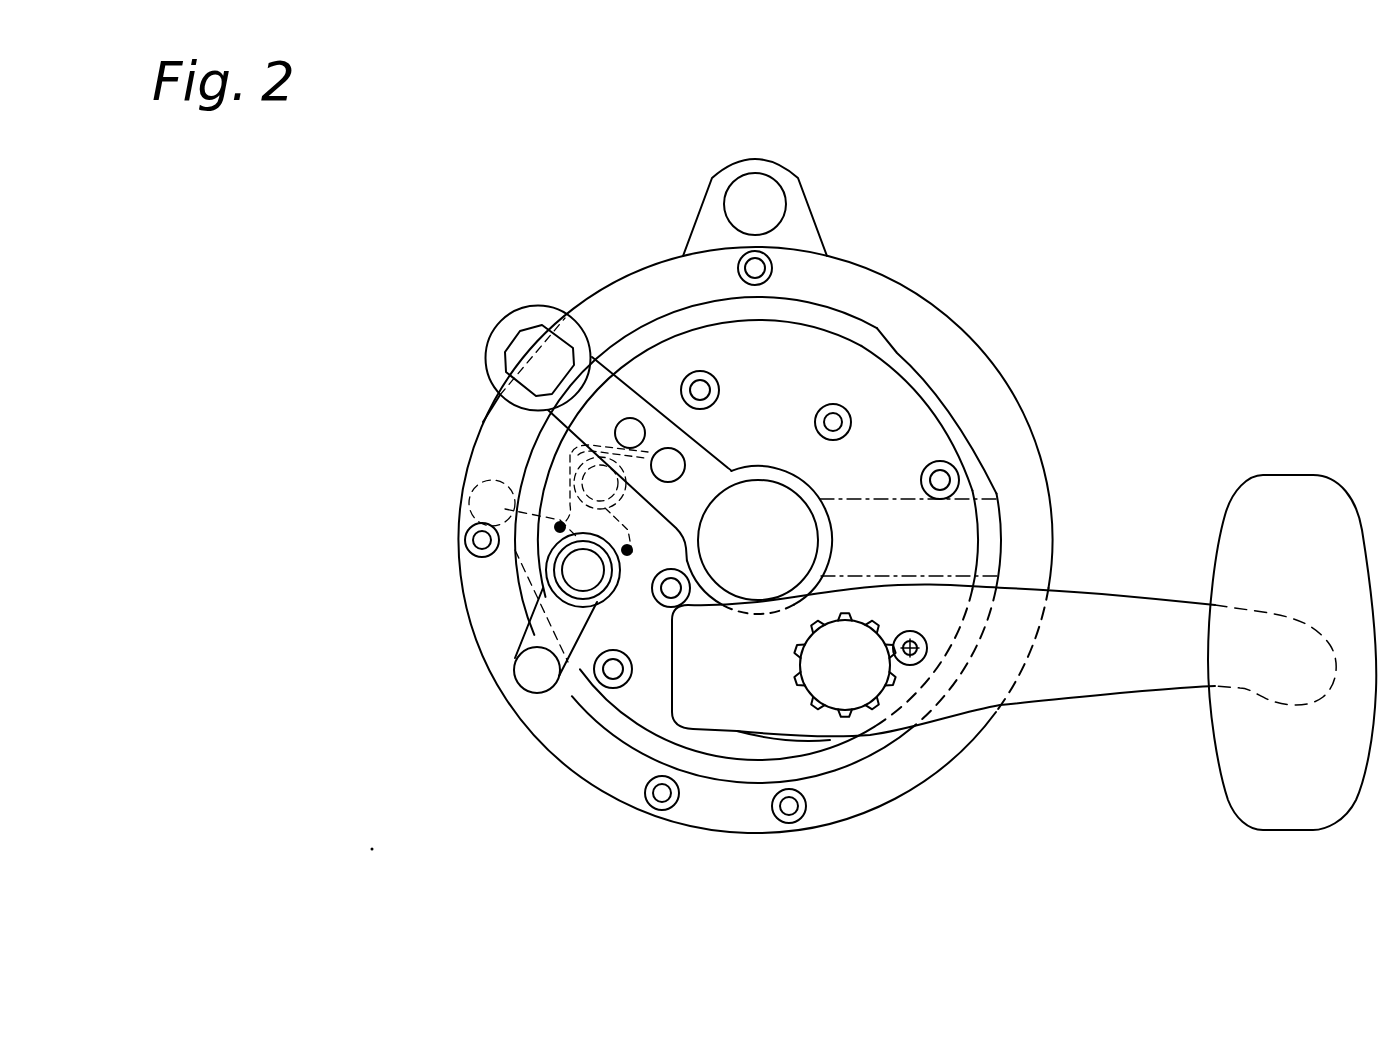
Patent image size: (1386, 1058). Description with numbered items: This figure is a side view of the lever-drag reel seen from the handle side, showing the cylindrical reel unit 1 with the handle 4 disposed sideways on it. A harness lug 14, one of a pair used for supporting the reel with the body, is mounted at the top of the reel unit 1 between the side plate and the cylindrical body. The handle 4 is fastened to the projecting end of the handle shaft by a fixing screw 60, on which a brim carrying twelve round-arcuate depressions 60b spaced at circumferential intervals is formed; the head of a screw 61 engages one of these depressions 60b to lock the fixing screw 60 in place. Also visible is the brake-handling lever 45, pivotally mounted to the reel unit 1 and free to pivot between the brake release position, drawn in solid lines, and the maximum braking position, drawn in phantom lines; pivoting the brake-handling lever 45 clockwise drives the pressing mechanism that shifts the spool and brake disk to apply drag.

The reel unit 1 is at (1010, 297).
The handle 4 is at (1128, 583).
The harness lug 14 is at (791, 214).
The brake-handling lever 45 is at (627, 405).
The fixing screw 60 is at (845, 683).
The round-arcuate depressions 60b is at (858, 705).
The screw 61 is at (913, 640).